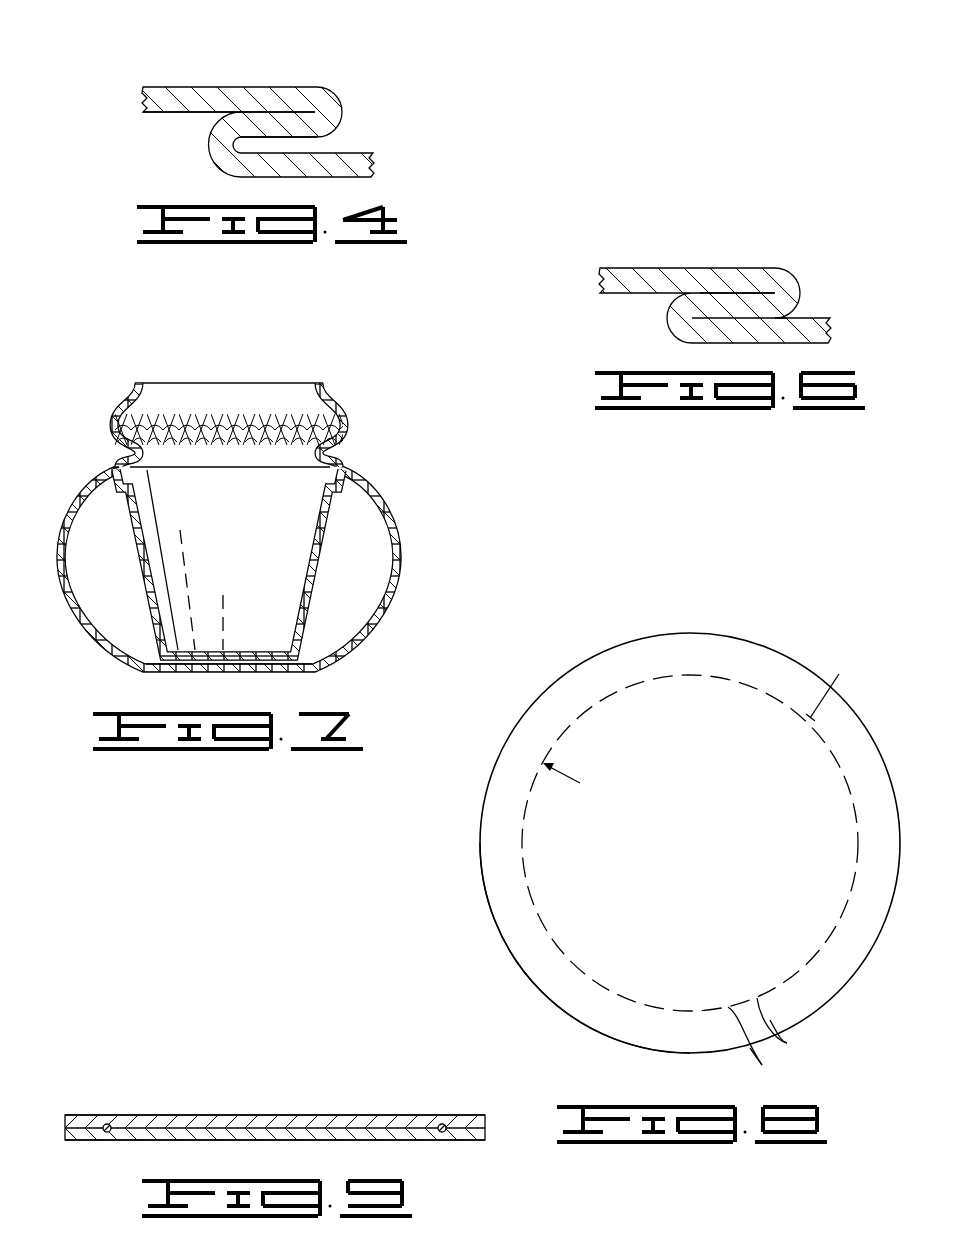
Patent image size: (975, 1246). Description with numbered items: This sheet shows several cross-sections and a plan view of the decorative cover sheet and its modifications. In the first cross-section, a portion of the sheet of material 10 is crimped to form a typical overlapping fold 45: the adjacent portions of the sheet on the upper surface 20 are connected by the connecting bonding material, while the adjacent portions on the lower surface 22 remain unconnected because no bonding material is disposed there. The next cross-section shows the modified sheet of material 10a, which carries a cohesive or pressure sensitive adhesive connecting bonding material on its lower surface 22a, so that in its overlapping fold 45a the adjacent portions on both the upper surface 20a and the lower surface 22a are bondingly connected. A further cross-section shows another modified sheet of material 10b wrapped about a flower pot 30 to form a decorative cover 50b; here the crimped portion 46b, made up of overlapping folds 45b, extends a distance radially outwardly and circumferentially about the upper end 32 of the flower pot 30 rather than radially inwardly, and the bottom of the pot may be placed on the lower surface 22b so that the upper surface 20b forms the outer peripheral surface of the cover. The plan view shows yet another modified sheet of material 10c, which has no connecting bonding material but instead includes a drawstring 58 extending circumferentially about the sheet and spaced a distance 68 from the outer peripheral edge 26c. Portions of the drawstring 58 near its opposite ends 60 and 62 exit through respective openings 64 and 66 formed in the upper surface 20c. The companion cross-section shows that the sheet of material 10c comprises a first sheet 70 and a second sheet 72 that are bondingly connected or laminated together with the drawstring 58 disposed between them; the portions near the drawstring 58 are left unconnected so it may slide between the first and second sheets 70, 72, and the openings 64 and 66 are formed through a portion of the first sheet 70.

In FIG. 4, the sheet of material 10 is at (170, 84).
In FIG. 4, the upper surface 20 is at (178, 112).
In FIG. 4, the lower surface 22 is at (272, 87).
In FIG. 4, the overlapping fold 45 is at (227, 82).
In FIG. 6, the sheet of material 10a is at (628, 268).
In FIG. 6, the upper surface 20a is at (637, 293).
In FIG. 6, the lower surface 22a is at (655, 268).
In FIG. 6, the overlapping fold 45a is at (727, 266).
In FIG. 7, the sheet of material 10b is at (369, 462).
In FIG. 7, the upper surface 20b is at (350, 630).
In FIG. 7, the lower surface 22b is at (392, 608).
In FIG. 7, the flower pot 30 is at (314, 577).
In FIG. 7, the upper end 32 is at (112, 457).
In FIG. 7, the overlapping fold 45b is at (223, 430).
In FIG. 7, the crimped portion 46b is at (354, 406).
In FIG. 7, the decorative cover 50b is at (397, 506).
In FIG. 8, the sheet of material 10c is at (571, 665).
In FIG. 9, the sheet of material 10c is at (200, 1110).
In FIG. 8, the upper surface 20c is at (493, 832).
In FIG. 8, the outer peripheral edge 26c is at (490, 935).
In FIG. 8, the drawstring 58 is at (847, 670).
In FIG. 9, the drawstring 58 is at (107, 1124).
In FIG. 8, the end 60 is at (762, 1065).
In FIG. 8, the end 62 is at (787, 1043).
In FIG. 8, the opening 64 is at (728, 1006).
In FIG. 8, the opening 66 is at (756, 995).
In FIG. 8, the distance 68 is at (503, 735).
In FIG. 9, the first sheet 70 is at (243, 1120).
In FIG. 9, the second sheet 72 is at (290, 1140).